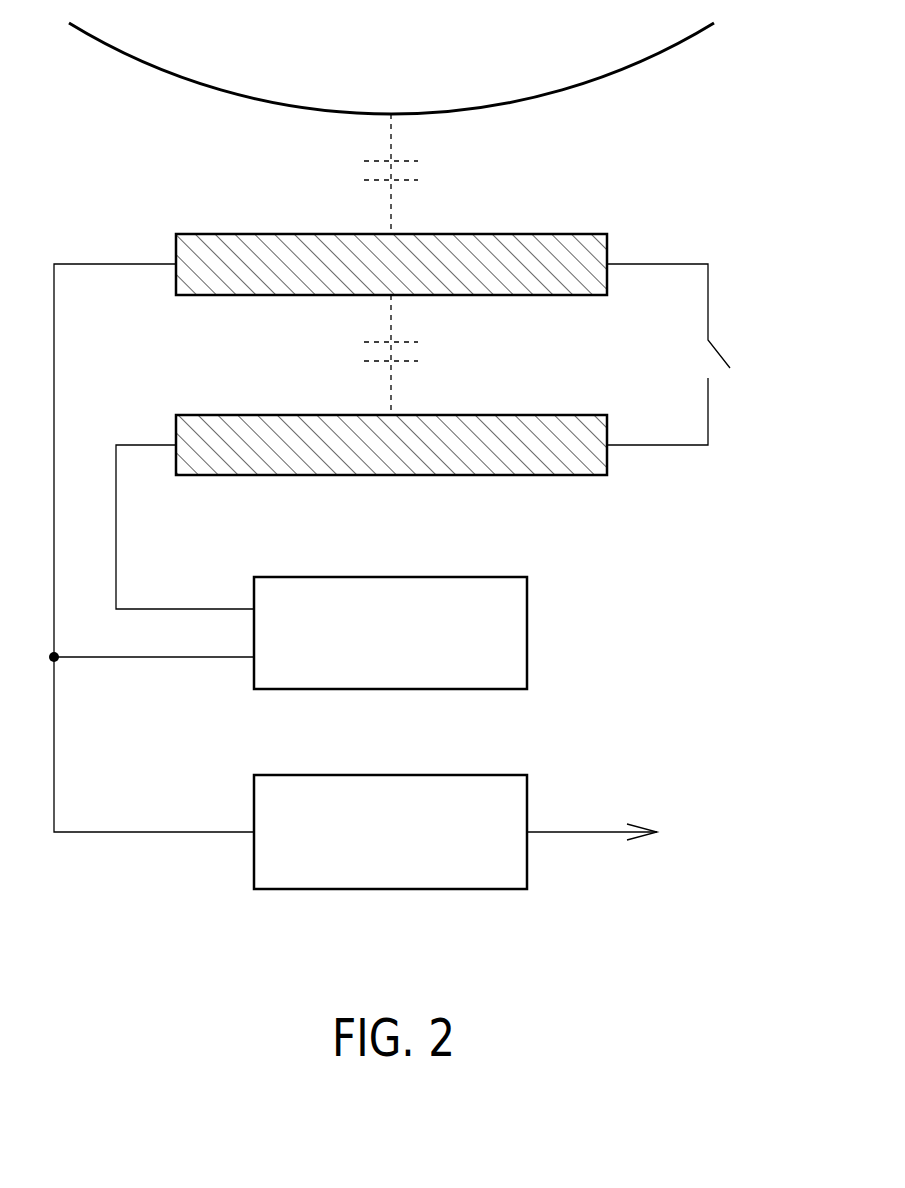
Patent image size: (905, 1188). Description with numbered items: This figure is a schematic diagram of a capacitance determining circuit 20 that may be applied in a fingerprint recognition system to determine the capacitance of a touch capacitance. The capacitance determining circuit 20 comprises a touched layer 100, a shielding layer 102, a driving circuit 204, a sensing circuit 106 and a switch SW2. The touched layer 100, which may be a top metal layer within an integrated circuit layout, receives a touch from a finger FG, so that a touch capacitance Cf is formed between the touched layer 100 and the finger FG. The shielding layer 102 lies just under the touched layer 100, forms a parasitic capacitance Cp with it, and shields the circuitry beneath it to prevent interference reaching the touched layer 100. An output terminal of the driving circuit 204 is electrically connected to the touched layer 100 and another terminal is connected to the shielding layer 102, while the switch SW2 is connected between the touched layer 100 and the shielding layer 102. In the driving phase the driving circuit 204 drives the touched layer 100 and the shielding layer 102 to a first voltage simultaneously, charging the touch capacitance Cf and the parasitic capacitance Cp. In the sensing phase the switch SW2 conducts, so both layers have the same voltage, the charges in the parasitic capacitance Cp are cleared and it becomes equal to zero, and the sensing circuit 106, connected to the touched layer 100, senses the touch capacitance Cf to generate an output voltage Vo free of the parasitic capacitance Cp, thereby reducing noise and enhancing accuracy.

The capacitance determining circuit 20 is at (736, 96).
The touched layer 100 is at (558, 233).
The shielding layer 102 is at (558, 414).
The driving circuit 204 is at (480, 576).
The sensing circuit 106 is at (480, 774).
The switch SW2 is at (698, 354).
The finger FG is at (391, 68).
The touch capacitance Cf is at (413, 174).
The parasitic capacitance Cp is at (413, 355).
The output voltage Vo is at (616, 832).